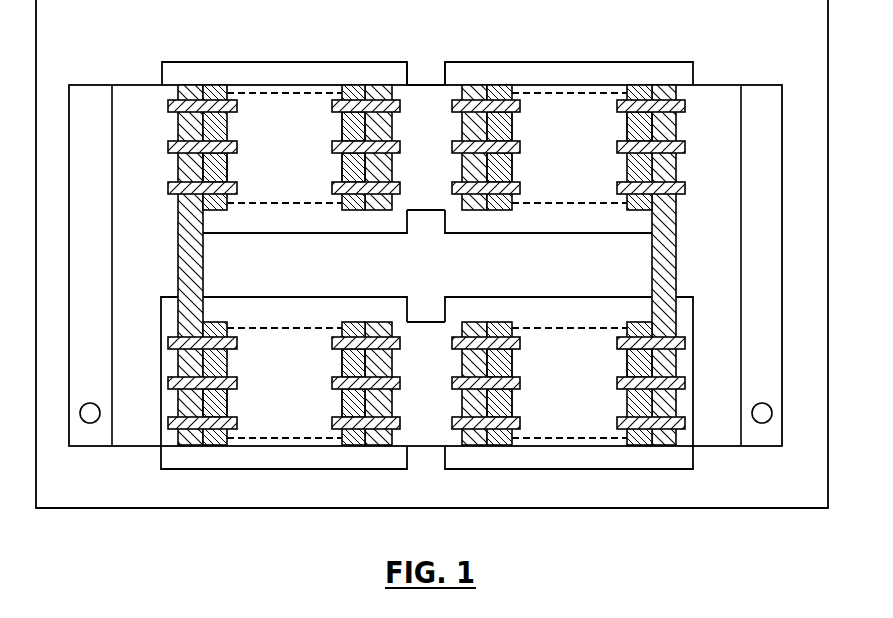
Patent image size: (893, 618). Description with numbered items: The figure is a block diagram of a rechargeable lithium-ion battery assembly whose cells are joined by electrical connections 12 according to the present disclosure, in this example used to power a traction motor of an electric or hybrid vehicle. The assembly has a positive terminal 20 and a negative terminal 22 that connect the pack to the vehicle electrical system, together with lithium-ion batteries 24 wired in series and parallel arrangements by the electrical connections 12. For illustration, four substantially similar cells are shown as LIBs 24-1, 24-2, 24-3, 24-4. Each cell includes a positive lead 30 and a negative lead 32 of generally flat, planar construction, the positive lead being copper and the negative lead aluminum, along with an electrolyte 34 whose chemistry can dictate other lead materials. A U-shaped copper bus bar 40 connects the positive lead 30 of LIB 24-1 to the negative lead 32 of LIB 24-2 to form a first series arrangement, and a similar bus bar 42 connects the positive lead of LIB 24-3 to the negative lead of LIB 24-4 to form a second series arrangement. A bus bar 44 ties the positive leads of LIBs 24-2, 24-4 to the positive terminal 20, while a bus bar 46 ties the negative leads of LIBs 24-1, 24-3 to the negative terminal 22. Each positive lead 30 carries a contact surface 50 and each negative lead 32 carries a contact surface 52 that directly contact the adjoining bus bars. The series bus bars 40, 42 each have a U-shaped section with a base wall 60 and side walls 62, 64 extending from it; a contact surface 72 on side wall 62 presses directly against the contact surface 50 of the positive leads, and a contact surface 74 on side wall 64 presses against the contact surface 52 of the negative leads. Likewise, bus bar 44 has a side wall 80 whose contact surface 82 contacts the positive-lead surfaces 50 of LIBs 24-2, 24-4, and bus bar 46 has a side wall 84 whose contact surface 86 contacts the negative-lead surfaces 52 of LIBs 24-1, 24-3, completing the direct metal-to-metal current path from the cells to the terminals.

The electrical connection 12 is at (156, 189).
The positive terminal 20 is at (762, 423).
The negative terminal 22 is at (90, 423).
The lithium-ion battery 24 is at (416, 236).
The first lithium-ion battery 24-1 is at (250, 62).
The second lithium-ion battery 24-2 is at (536, 62).
The third lithium-ion battery 24-3 is at (255, 297).
The fourth lithium-ion battery 24-4 is at (530, 297).
The positive lead 30 is at (352, 90).
The negative lead 32 is at (213, 90).
The electrolyte 34 is at (300, 92).
The bus bar 40 is at (426, 84).
The bus bar 42 is at (428, 320).
The bus bar 44 is at (710, 85).
The bus bar 46 is at (130, 85).
The contact surface 50 is at (392, 122).
The contact surface 52 is at (176, 172).
The base wall 60 is at (436, 200).
The side wall 62 is at (355, 128).
The side wall 64 is at (500, 124).
The contact surface 72 is at (355, 166).
The contact surface 74 is at (500, 160).
The side wall 80 is at (670, 268).
The contact surface 82 is at (640, 133).
The side wall 84 is at (185, 268).
The contact surface 86 is at (222, 160).